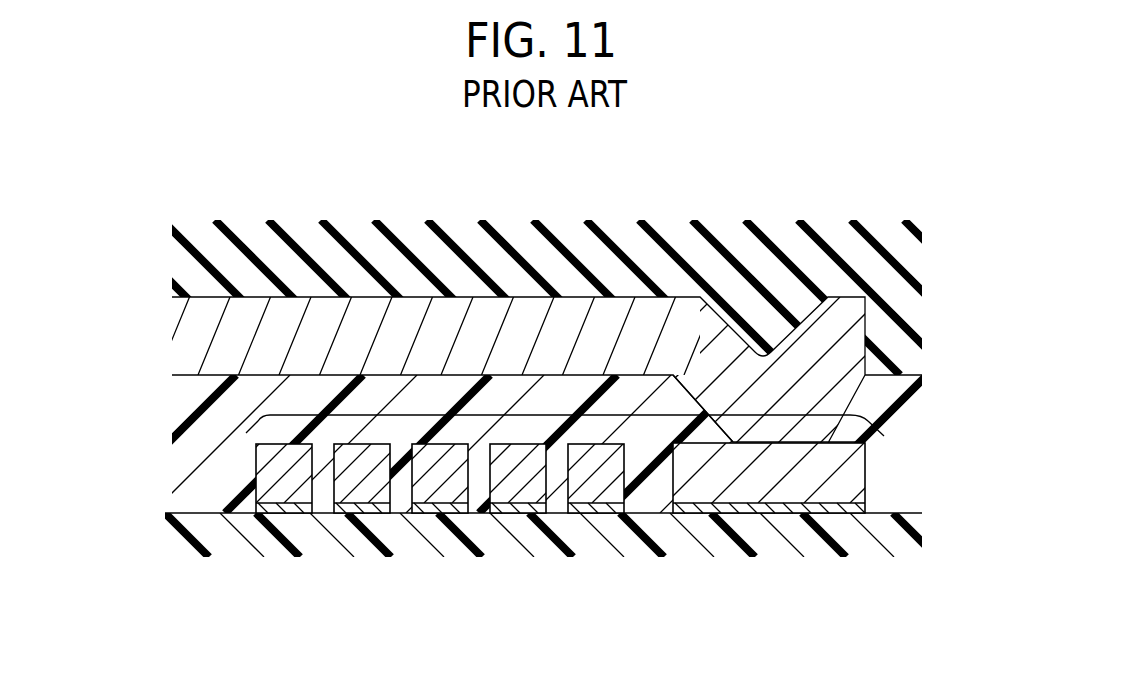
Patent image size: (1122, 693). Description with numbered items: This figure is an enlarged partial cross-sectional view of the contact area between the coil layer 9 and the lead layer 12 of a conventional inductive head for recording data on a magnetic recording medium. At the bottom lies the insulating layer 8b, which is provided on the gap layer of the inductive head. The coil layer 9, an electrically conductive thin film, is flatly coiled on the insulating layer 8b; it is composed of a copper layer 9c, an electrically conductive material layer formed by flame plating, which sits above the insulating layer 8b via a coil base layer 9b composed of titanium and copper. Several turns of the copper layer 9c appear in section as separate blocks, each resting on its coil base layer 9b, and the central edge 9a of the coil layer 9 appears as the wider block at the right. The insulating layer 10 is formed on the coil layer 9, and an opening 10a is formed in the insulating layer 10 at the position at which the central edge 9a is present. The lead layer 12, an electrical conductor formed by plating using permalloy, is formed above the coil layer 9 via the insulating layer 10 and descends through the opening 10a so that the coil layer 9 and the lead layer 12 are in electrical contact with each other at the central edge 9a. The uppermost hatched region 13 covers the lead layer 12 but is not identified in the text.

The upper insulating layer 13 is at (247, 263).
The lead layer 12 is at (253, 340).
The insulating layer 10 is at (252, 403).
The opening 10a is at (695, 378).
The coil layer 9 is at (558, 414).
The copper layer 9c is at (283, 470).
The coil base layer 9b is at (265, 517).
The central edge 9a is at (670, 473).
The insulating layer 8b is at (483, 537).